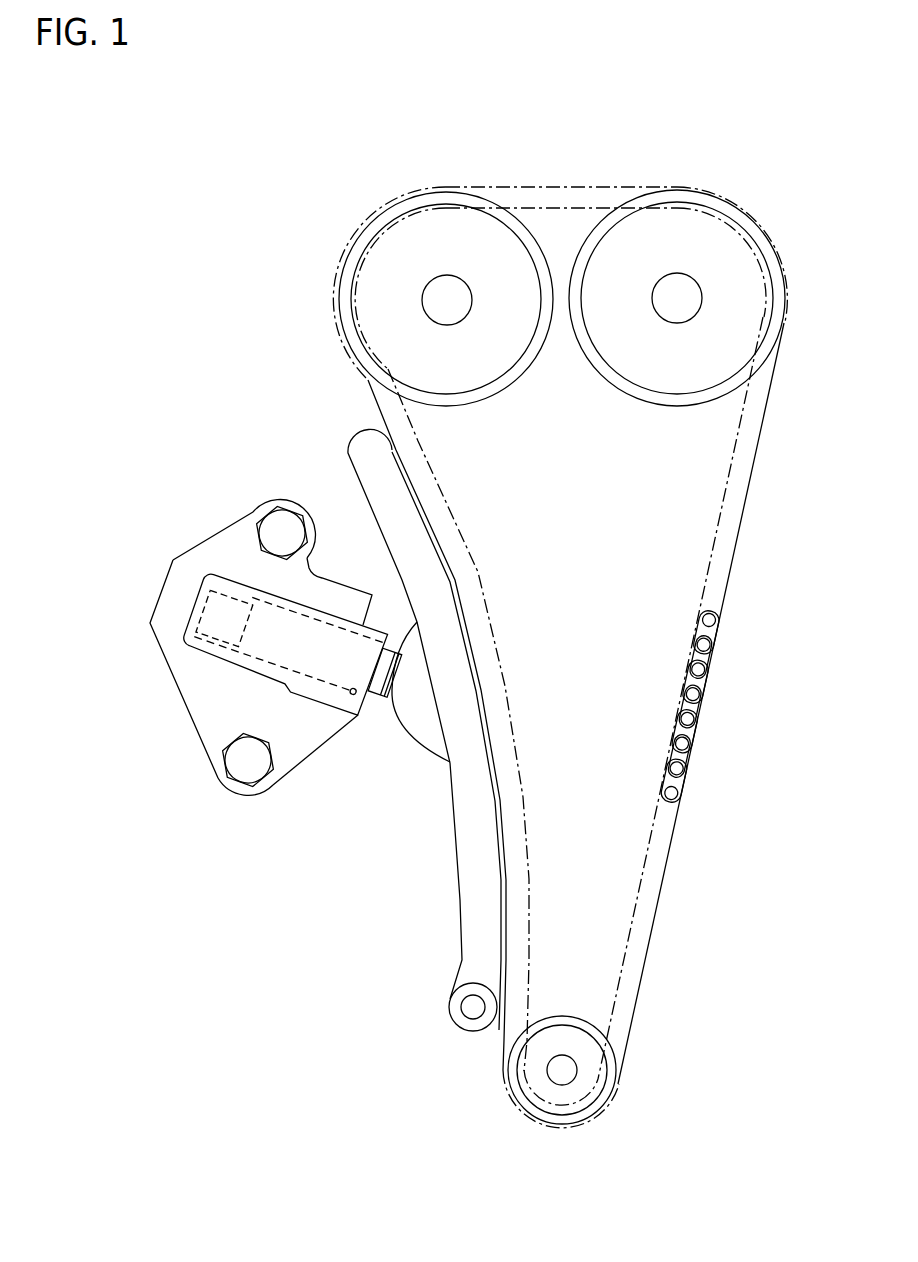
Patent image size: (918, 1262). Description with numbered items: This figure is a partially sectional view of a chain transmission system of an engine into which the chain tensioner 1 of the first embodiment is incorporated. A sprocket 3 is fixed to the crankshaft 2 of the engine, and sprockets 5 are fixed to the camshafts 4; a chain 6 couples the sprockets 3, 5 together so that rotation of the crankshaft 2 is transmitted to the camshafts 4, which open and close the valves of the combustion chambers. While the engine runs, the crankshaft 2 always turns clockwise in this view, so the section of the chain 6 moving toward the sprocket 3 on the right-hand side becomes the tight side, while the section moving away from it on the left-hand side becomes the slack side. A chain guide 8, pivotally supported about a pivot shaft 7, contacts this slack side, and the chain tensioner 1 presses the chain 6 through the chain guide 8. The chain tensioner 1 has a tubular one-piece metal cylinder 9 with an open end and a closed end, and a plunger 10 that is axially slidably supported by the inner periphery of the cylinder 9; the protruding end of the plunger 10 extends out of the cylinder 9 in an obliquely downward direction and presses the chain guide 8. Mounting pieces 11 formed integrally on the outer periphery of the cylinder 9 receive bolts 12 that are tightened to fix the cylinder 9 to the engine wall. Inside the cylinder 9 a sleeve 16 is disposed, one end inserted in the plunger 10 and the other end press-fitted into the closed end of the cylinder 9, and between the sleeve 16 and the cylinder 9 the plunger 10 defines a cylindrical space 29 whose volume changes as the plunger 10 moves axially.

The chain tensioner 1 is at (184, 549).
The crankshaft 2 is at (553, 1067).
The sprocket 3 is at (543, 1112).
The camshaft 4 is at (448, 285).
The sprocket 5 is at (362, 242).
The chain 6 is at (700, 713).
The pivot shaft 7 is at (467, 1005).
The chain guide 8 is at (367, 440).
The cylinder 9 is at (225, 660).
The plunger 10 is at (370, 700).
The mounting piece 11 is at (282, 498).
The bolt 12 is at (272, 532).
The sleeve 16 is at (207, 613).
The cylindrical space 29 is at (193, 657).